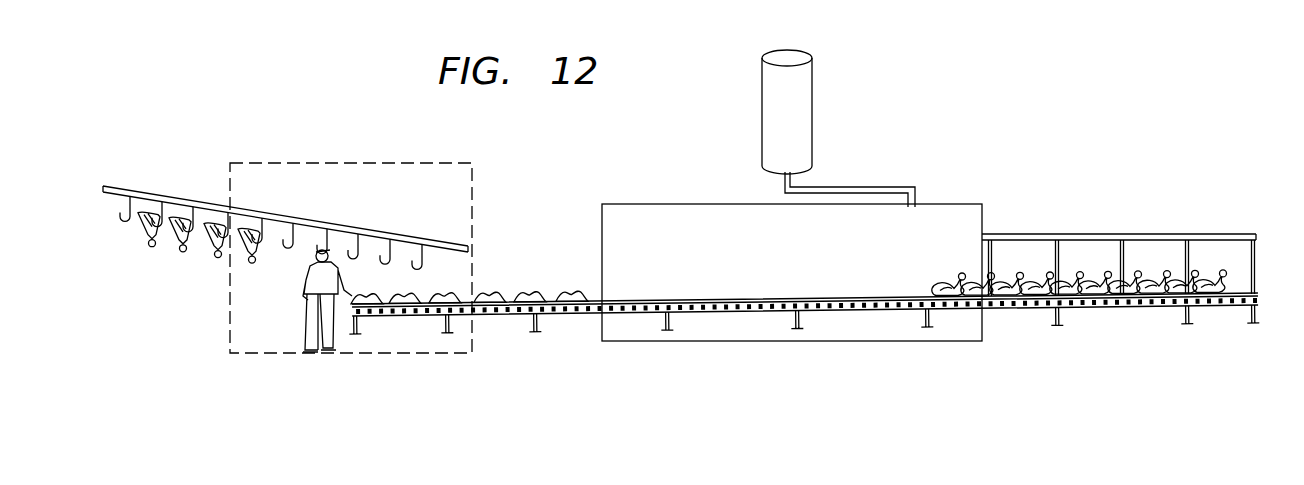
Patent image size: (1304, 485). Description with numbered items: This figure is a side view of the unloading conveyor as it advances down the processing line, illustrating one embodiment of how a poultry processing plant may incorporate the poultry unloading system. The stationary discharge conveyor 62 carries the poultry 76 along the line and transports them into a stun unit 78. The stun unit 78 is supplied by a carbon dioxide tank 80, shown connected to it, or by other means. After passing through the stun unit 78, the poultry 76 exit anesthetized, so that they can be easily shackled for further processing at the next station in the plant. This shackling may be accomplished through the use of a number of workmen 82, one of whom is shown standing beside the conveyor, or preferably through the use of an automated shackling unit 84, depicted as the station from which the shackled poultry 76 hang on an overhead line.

The stationary discharge conveyor 62 is at (507, 318).
The poultry 76 is at (145, 228).
The stun unit 78 is at (803, 258).
The carbon dioxide tank 80 is at (803, 128).
The workmen 82 is at (308, 324).
The automated shackling unit 84 is at (313, 163).